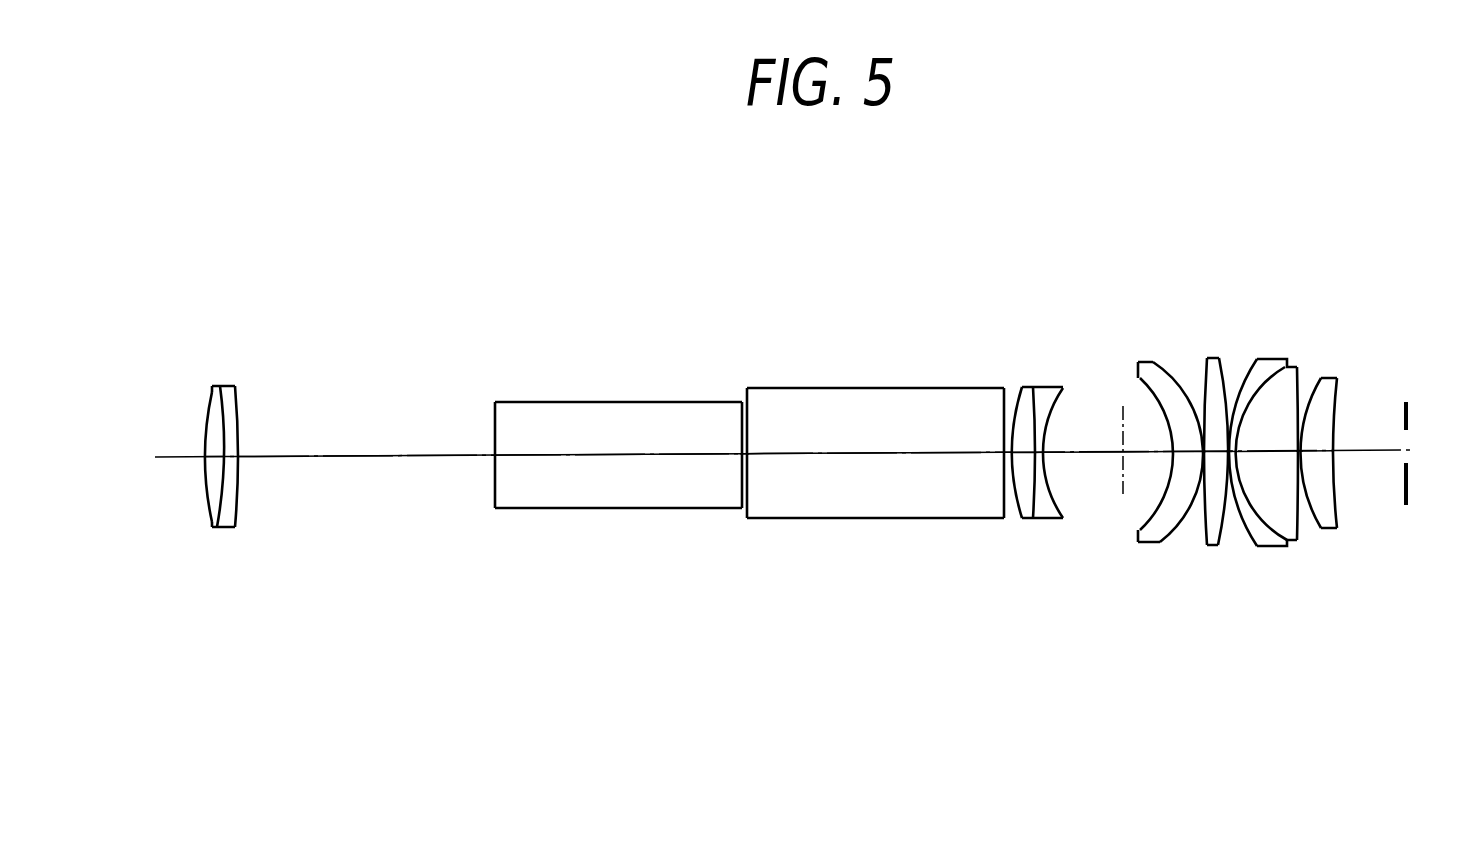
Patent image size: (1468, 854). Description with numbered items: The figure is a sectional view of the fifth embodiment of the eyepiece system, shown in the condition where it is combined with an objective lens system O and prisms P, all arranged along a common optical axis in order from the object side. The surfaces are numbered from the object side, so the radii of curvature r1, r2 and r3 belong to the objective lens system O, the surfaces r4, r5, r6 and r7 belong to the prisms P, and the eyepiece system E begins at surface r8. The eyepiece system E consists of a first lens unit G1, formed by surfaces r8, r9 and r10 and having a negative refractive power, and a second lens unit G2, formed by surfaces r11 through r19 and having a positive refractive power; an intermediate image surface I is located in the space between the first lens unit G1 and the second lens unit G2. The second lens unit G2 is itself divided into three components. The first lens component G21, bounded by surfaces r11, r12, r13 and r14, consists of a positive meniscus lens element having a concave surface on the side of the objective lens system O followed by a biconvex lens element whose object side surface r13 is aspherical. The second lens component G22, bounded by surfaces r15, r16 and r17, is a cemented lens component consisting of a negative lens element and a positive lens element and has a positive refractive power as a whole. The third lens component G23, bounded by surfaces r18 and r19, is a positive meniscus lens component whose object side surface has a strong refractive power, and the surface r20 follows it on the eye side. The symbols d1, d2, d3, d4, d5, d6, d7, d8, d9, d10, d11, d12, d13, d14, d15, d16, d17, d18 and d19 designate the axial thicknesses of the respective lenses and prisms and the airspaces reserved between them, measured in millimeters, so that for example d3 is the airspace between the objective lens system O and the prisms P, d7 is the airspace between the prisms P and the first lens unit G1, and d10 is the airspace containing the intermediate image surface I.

The objective lens system O is at (255, 625).
The prisms P is at (1004, 619).
The eyepiece system E is at (1378, 212).
The first lens unit G1 is at (1075, 619).
The second lens unit G2 is at (1363, 718).
The first lens component G21 is at (1223, 668).
The second lens component G22 is at (1307, 668).
The third lens component G23 is at (1363, 668).
The intermediate image surface I is at (1117, 405).
The radius of curvature of first lens surface r1 is at (205, 422).
The radius of curvature of second lens surface r2 is at (221, 405).
The radius of curvature of third lens surface r3 is at (237, 412).
The radius of curvature of fourth lens surface r4 is at (494, 412).
The radius of curvature of fifth lens surface r5 is at (742, 422).
The radius of curvature of sixth lens surface r6 is at (750, 412).
The radius of curvature of seventh lens surface r7 is at (1003, 412).
The radius of curvature of eighth lens surface r8 is at (1020, 398).
The radius of curvature of ninth lens surface r9 is at (1034, 392).
The radius of curvature of tenth lens surface r10 is at (1060, 410).
The radius of curvature of eleventh lens surface r11 is at (1143, 378).
The radius of curvature of twelfth lens surface r12 is at (1170, 398).
The radius of curvature of thirteenth lens surface r13 is at (1207, 398).
The radius of curvature of fourteenth lens surface r14 is at (1222, 400).
The radius of curvature of fifteenth lens surface r15 is at (1250, 412).
The radius of curvature of sixteenth lens surface r16 is at (1285, 398).
The radius of curvature of seventeenth lens surface r17 is at (1298, 408).
The radius of curvature of eighteenth lens surface r18 is at (1322, 398).
The radius of curvature of nineteenth lens surface r19 is at (1340, 405).
The radius of curvature of twentieth surface r20 is at (1410, 440).
The lens thickness d1 is at (218, 452).
The lens thickness d2 is at (238, 452).
The airspace d3 is at (377, 458).
The prism thickness d4 is at (595, 457).
The airspace d5 is at (745, 458).
The prism thickness d6 is at (873, 456).
The airspace d7 is at (1005, 456).
The lens thickness d8 is at (1027, 456).
The lens thickness d9 is at (1045, 455).
The airspace d10 is at (1095, 454).
The lens thickness d11 is at (1170, 455).
The airspace d12 is at (1195, 454).
The lens thickness d13 is at (1208, 455).
The airspace d14 is at (1218, 455).
The lens thickness d15 is at (1230, 455).
The lens thickness d16 is at (1233, 455).
The airspace d17 is at (1268, 455).
The lens thickness d18 is at (1300, 455).
The airspace d19 is at (1318, 454).